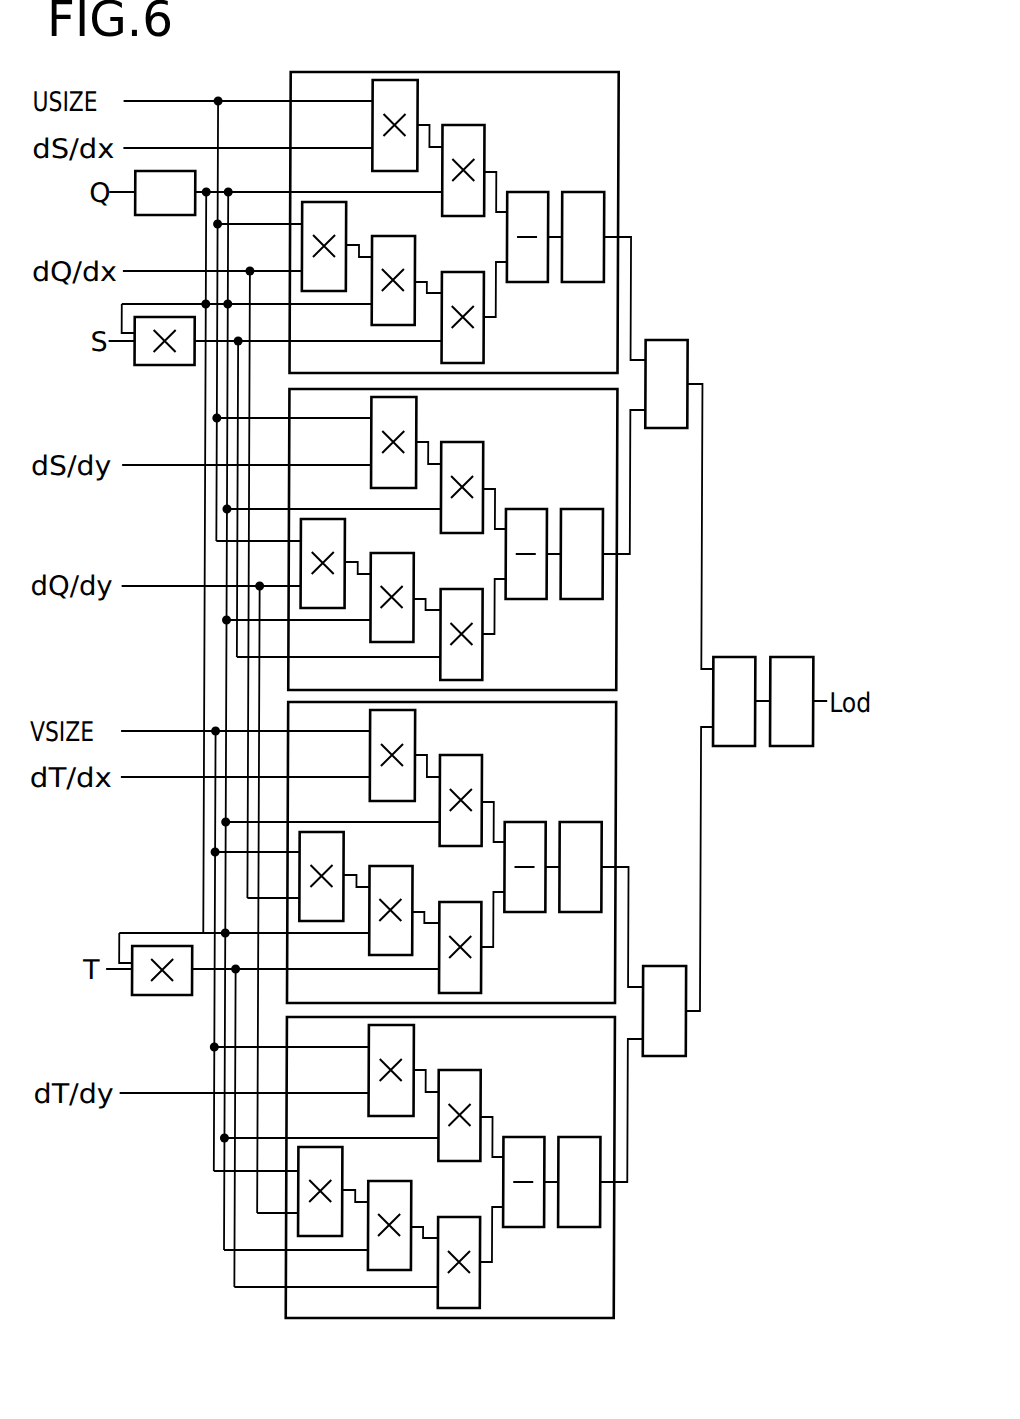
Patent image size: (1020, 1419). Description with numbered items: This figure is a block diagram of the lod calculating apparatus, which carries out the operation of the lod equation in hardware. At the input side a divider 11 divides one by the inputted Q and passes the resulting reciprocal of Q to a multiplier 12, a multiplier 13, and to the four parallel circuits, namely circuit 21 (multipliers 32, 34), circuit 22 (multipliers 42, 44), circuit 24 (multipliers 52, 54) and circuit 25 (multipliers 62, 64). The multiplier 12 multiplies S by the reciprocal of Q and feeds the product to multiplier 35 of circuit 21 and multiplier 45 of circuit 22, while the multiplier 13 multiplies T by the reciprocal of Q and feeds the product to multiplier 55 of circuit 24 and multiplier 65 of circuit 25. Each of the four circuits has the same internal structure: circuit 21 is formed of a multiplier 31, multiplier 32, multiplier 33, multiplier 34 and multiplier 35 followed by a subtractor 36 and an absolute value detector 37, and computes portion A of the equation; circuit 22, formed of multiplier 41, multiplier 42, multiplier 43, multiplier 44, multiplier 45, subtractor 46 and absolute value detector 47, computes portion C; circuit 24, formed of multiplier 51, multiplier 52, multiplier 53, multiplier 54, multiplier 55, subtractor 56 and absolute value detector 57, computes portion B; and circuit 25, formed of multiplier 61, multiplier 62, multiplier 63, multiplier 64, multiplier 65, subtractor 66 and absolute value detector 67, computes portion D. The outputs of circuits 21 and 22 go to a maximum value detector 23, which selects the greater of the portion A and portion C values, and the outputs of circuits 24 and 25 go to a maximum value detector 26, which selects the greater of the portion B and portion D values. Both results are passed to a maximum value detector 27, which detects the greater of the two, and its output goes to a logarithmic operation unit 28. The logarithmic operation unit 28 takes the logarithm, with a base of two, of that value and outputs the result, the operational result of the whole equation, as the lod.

The divider 11 is at (163, 215).
The multiplier 12 is at (163, 365).
The multiplier 13 is at (163, 995).
The circuit 21 is at (619, 100).
The circuit 22 is at (619, 660).
The maximum value detector 23 is at (667, 340).
The circuit 24 is at (619, 743).
The circuit 25 is at (619, 1288).
The maximum value detector 26 is at (665, 966).
The maximum value detector 27 is at (733, 657).
The logarithmic operation unit 28 is at (795, 657).
The multiplier 31 is at (418, 100).
The multiplier 32 is at (485, 141).
The multiplier 33 is at (347, 210).
The multiplier 34 is at (416, 247).
The multiplier 35 is at (485, 340).
The subtractor 36 is at (530, 192).
The absolute value detector 37 is at (592, 282).
The multiplier 41 is at (418, 417).
The multiplier 42 is at (485, 458).
The multiplier 43 is at (347, 527).
The multiplier 44 is at (416, 564).
The multiplier 45 is at (485, 657).
The subtractor 46 is at (530, 509).
The absolute value detector 47 is at (592, 599).
The multiplier 51 is at (418, 730).
The multiplier 52 is at (485, 771).
The multiplier 53 is at (347, 840).
The multiplier 54 is at (416, 877).
The multiplier 55 is at (485, 970).
The subtractor 56 is at (530, 822).
The absolute value detector 57 is at (592, 912).
The multiplier 61 is at (418, 1045).
The multiplier 62 is at (485, 1086).
The multiplier 63 is at (347, 1155).
The multiplier 64 is at (416, 1192).
The multiplier 65 is at (485, 1285).
The subtractor 66 is at (530, 1137).
The absolute value detector 67 is at (592, 1227).